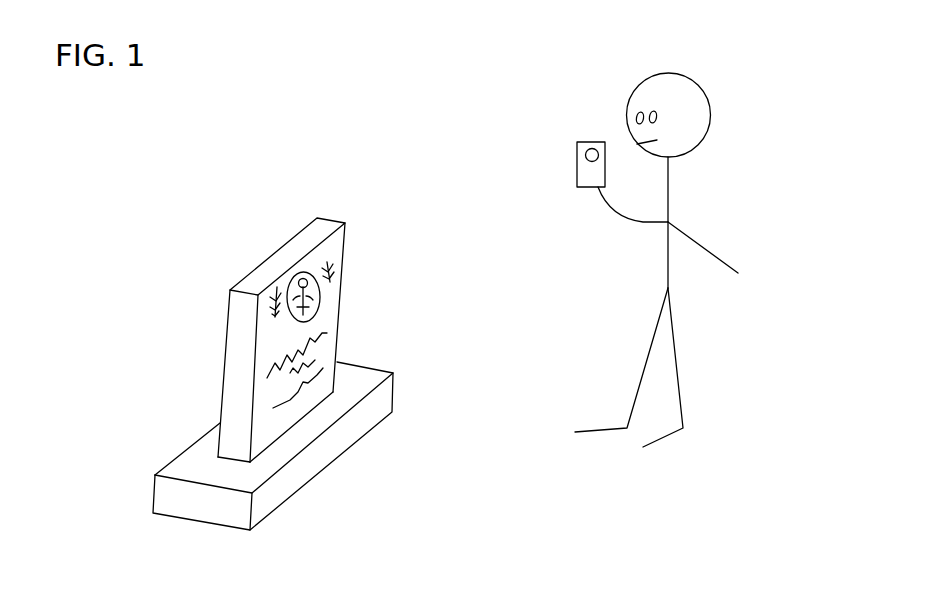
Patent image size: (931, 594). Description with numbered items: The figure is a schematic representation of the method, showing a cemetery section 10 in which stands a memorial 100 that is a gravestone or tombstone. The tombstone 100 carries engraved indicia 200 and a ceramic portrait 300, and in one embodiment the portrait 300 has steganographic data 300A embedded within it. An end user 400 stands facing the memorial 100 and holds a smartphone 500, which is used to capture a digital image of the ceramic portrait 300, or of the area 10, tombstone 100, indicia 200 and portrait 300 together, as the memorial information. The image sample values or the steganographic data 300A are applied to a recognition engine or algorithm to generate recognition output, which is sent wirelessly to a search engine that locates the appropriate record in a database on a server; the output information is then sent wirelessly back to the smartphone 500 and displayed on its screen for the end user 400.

The cemetery section 10 is at (478, 223).
The memorial 100 is at (315, 238).
The engraved indicia 200 is at (335, 268).
The ceramic portrait 300 is at (322, 297).
The steganographic data 300A is at (293, 283).
The end user 400 is at (703, 148).
The smartphone 500 is at (587, 143).